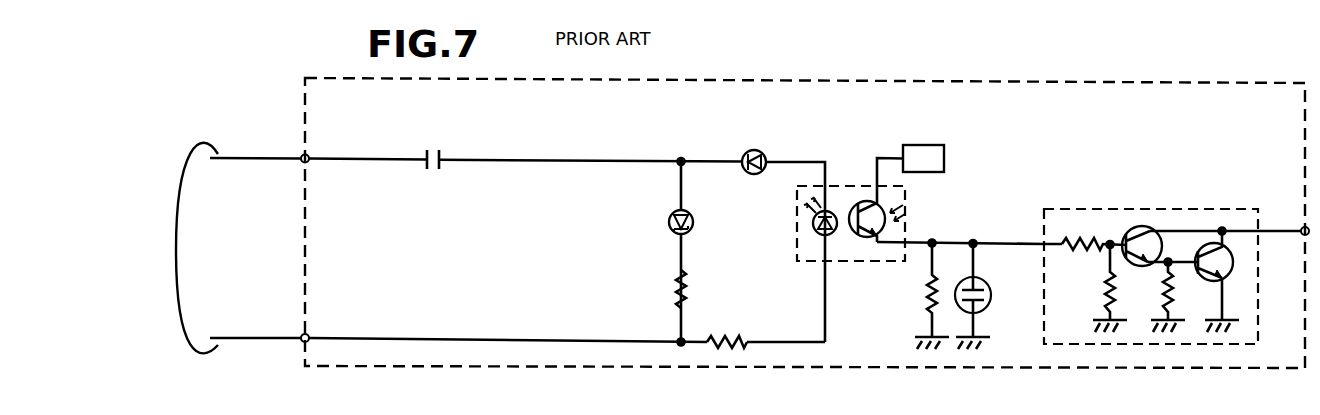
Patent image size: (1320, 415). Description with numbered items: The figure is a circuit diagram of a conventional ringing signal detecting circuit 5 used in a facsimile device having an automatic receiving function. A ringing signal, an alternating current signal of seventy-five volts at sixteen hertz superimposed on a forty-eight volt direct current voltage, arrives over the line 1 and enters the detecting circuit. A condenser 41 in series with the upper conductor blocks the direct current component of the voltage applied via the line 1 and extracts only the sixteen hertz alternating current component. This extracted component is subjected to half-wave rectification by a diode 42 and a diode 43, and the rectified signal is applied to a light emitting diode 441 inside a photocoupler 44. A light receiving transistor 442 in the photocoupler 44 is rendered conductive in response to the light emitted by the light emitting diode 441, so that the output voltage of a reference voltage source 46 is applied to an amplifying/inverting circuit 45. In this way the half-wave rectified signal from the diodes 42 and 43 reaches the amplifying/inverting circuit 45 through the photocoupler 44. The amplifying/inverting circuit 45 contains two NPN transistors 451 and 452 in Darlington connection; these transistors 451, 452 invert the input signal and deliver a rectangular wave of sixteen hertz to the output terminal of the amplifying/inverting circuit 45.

The line 1 is at (186, 248).
The ringing signal detecting circuit 5 is at (963, 82).
The condenser 41 is at (432, 149).
The diode 42 is at (669, 218).
The diode 43 is at (763, 151).
The photocoupler 44 is at (905, 201).
The light emitting diode 441 is at (835, 211).
The light receiving transistor 442 is at (862, 237).
The amplifying/inverting circuit 45 is at (1082, 209).
The NPN transistor 451 is at (1135, 266).
The NPN transistor 452 is at (1197, 273).
The reference voltage source 46 is at (922, 145).